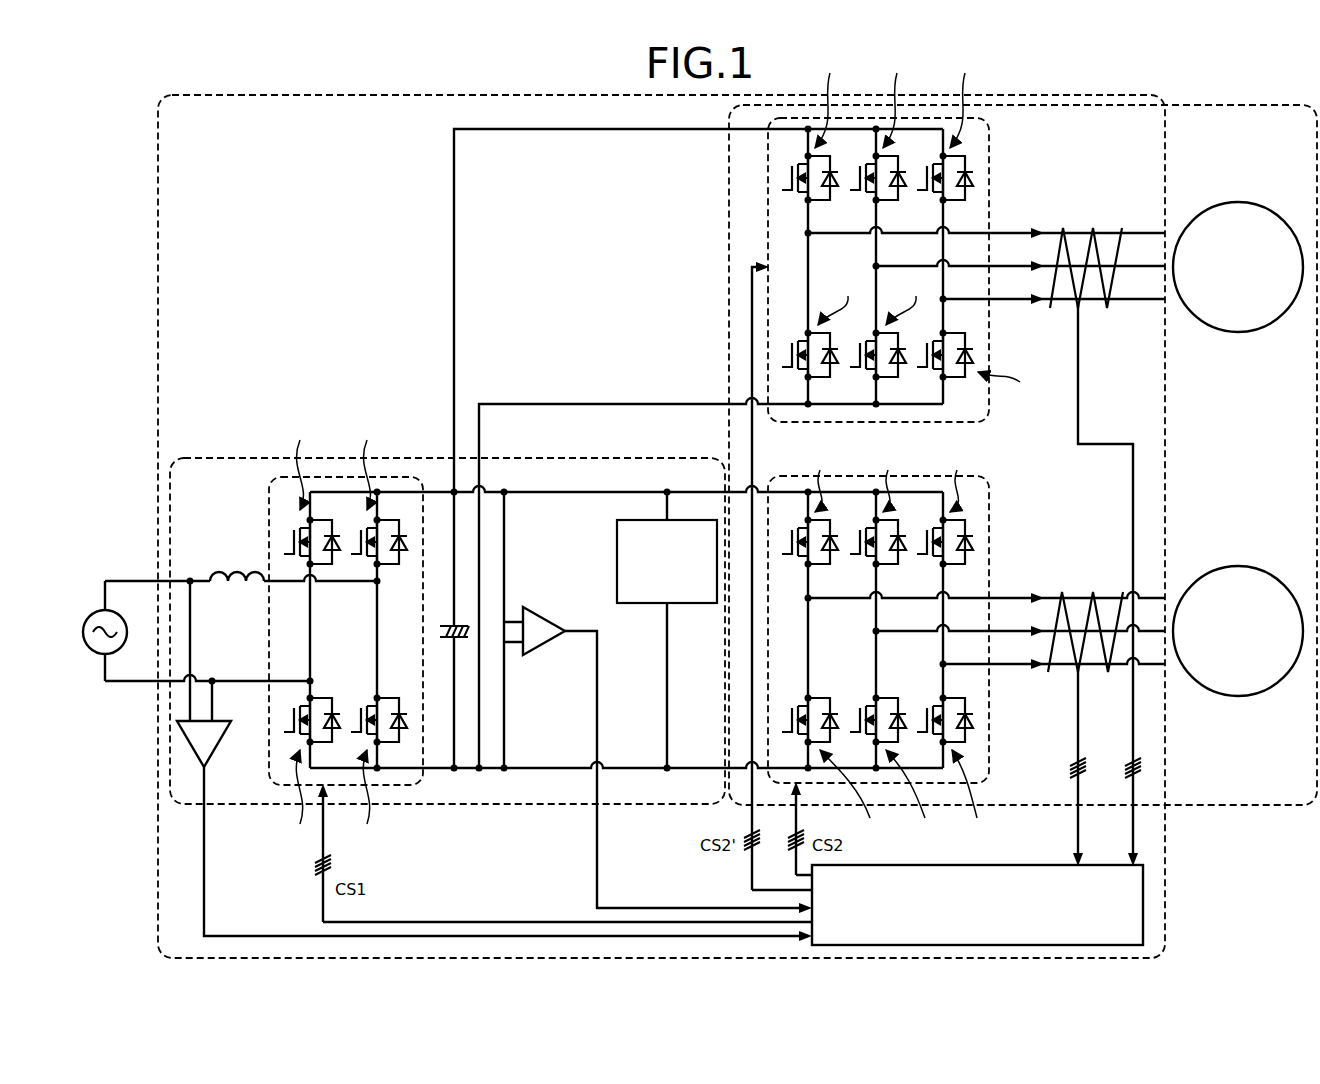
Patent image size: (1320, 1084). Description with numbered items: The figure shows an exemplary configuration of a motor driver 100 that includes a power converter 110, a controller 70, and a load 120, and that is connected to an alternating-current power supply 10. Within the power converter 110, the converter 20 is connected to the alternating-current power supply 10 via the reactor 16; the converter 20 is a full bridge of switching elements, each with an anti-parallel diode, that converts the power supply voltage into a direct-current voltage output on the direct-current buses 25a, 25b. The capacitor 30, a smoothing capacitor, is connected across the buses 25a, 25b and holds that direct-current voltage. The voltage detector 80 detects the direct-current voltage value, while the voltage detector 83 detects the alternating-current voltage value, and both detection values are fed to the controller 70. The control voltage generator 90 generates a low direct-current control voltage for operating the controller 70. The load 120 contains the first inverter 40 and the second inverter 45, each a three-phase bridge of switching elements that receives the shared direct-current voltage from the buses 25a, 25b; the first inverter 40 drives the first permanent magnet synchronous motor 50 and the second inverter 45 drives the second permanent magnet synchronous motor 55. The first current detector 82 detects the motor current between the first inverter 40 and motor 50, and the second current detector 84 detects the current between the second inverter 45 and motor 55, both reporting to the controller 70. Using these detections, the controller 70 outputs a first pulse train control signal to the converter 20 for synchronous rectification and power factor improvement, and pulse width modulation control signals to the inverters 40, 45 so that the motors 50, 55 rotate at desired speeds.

The alternating-current power supply 10 is at (100, 607).
The reactor 16 is at (222, 575).
The converter 20 is at (267, 502).
The direct-current bus 25a is at (436, 490).
The direct-current bus 25b is at (464, 772).
The capacitor 30 is at (451, 642).
The first inverter 40 is at (989, 502).
The second inverter 45 is at (989, 140).
The first permanent magnet synchronous motor 50 is at (1237, 566).
The second permanent magnet synchronous motor 55 is at (1237, 202).
The controller 70 is at (1032, 865).
The voltage detector 80 is at (533, 610).
The first current detector 82 is at (1090, 592).
The voltage detector 83 is at (226, 738).
The second current detector 84 is at (1090, 226).
The control voltage generator 90 is at (674, 603).
The motor driver 100 is at (1132, 95).
The power converter 110 is at (200, 456).
The load 120 is at (1240, 104).